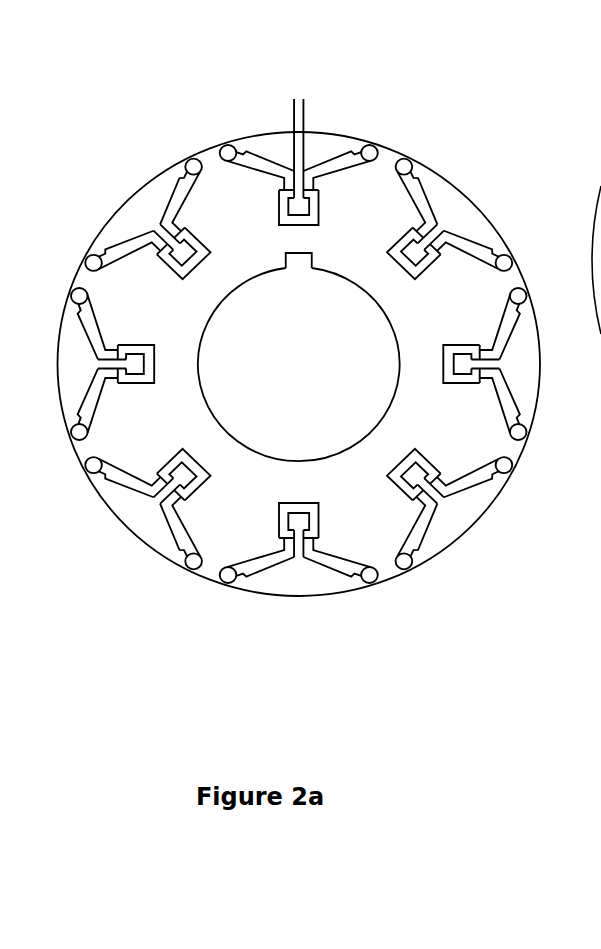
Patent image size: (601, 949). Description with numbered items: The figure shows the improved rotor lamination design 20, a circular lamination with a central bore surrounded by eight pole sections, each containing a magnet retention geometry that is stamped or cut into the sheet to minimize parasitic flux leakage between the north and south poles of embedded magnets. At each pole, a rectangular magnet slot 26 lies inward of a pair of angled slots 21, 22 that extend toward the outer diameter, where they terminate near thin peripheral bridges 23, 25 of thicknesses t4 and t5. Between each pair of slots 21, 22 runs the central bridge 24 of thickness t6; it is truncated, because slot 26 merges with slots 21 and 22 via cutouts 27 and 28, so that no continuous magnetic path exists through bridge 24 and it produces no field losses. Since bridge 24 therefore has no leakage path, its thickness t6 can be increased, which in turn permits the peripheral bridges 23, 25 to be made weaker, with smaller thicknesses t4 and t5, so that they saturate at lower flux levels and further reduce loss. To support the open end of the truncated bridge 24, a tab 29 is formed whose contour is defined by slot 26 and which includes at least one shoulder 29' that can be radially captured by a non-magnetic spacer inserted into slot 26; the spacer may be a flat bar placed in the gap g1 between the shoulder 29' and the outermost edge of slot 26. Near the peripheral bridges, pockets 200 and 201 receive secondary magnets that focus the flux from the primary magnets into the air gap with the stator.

The lamination design 20 is at (484, 544).
The slot 21 is at (463, 236).
The slot 22 is at (426, 202).
The peripheral bridge 23 is at (371, 151).
The central bridge 24 is at (297, 196).
The peripheral bridge 25 is at (222, 148).
The slot 26 is at (173, 507).
The cutout 27 is at (284, 553).
The cutout 28 is at (297, 557).
The tab 29 is at (102, 489).
The shoulder 29' is at (344, 593).
The pocket 200 is at (414, 568).
The pocket 201 is at (505, 473).
The thickness t4 is at (233, 141).
The thickness t5 is at (368, 146).
The thickness t6 is at (309, 110).
The gap g1 is at (38, 190).